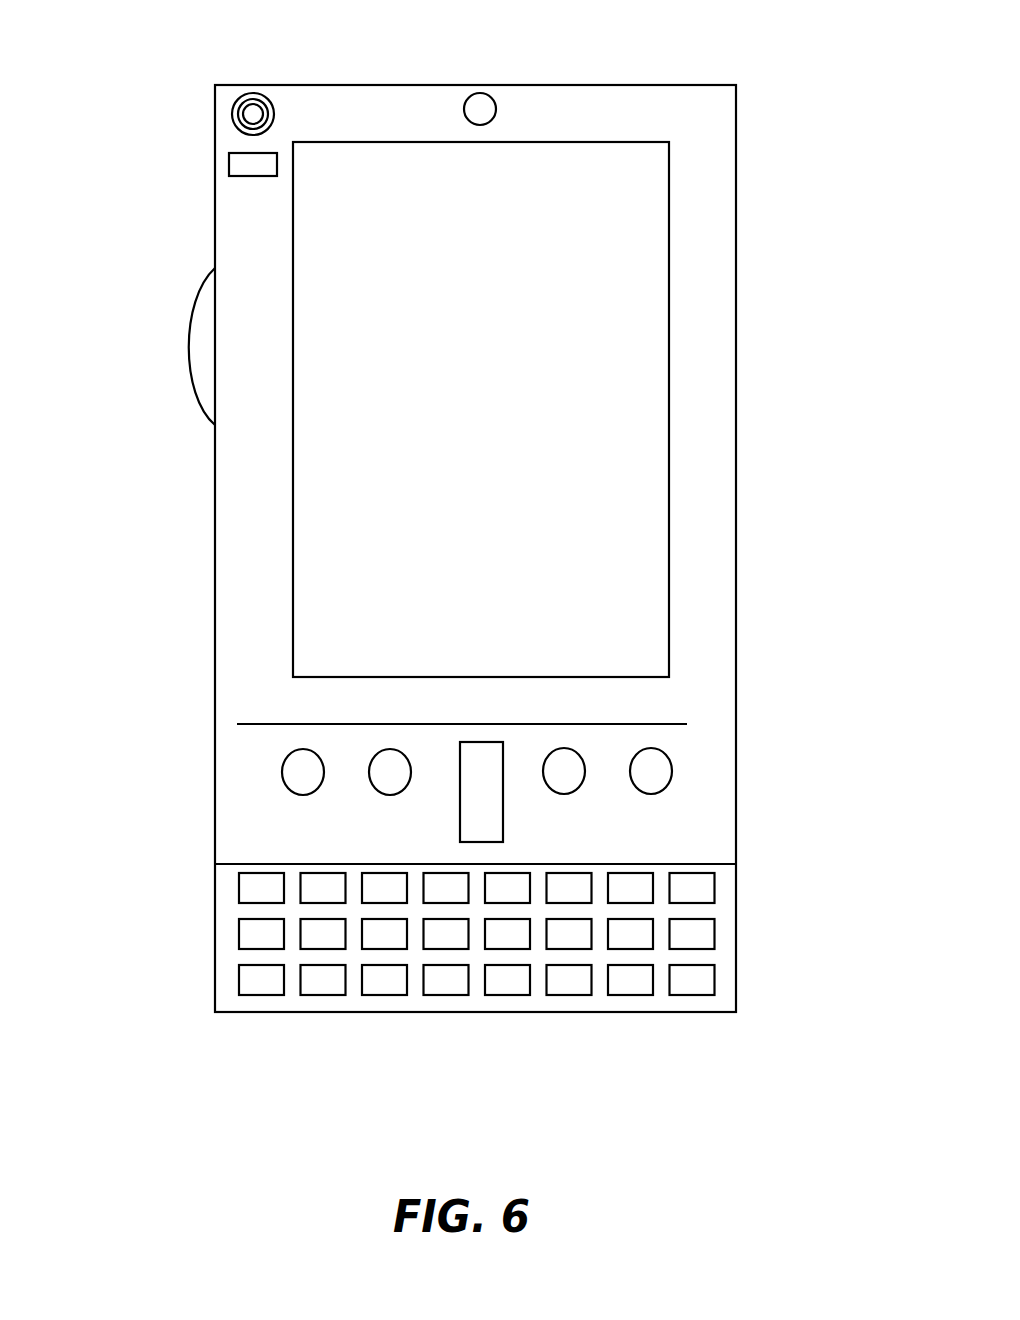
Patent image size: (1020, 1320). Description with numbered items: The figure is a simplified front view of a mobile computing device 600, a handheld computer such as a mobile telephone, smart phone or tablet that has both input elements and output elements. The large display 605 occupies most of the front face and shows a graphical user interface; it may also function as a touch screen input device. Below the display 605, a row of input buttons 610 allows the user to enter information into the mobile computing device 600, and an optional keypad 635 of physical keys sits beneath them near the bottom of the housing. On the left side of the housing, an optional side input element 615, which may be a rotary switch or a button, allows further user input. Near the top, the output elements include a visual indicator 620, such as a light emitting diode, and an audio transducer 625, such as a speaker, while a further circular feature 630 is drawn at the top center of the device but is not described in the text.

The mobile computing device 600 is at (723, 105).
The display 605 is at (408, 587).
The input buttons 610 is at (478, 797).
The side input element 615 is at (205, 347).
The visual indicator 620 is at (229, 168).
The audio transducer 625 is at (232, 114).
The speaker 630 is at (490, 109).
The keypad 635 is at (225, 986).